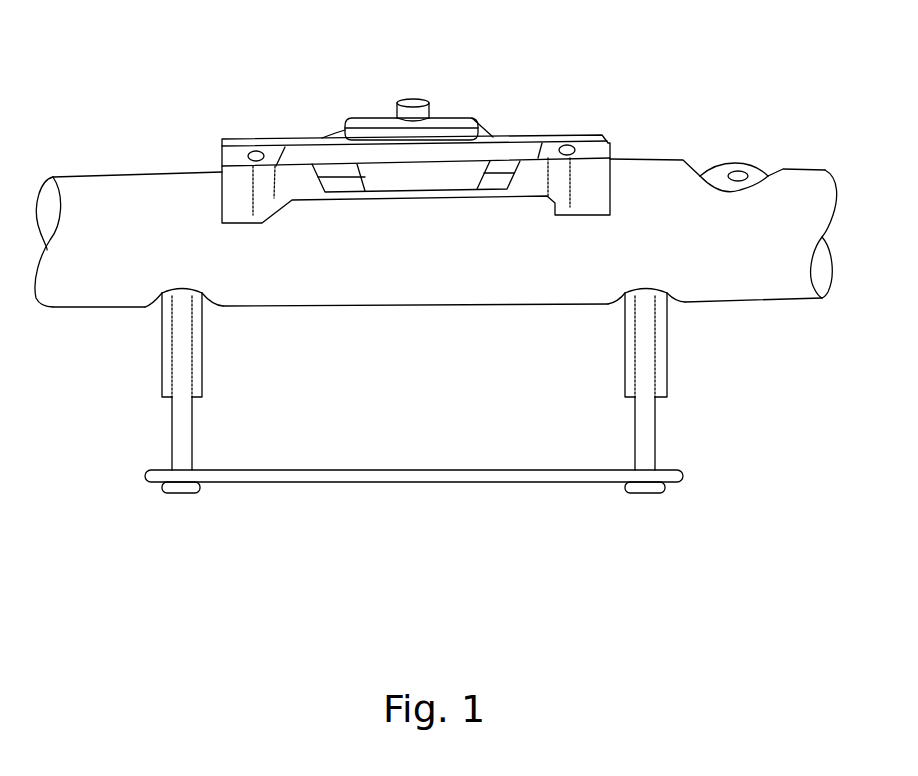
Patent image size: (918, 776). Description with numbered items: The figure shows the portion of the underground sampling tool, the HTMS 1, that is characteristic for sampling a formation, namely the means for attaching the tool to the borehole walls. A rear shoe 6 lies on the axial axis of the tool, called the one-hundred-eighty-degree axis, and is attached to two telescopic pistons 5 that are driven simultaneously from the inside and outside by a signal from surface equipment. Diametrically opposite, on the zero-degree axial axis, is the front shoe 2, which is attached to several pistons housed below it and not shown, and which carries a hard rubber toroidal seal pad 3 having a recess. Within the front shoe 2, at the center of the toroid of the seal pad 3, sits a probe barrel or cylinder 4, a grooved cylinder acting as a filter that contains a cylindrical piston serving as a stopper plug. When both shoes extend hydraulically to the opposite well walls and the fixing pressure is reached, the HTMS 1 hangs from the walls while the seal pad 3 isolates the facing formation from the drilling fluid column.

The underground sampling tool (HTMS) 1 is at (171, 147).
The front shoe 2 is at (618, 138).
The toroidal seal pad 3 is at (363, 114).
The probe barrel or cylinder 4 is at (424, 93).
The telescopic pistons 5 is at (227, 353).
The rear shoe 6 is at (315, 487).